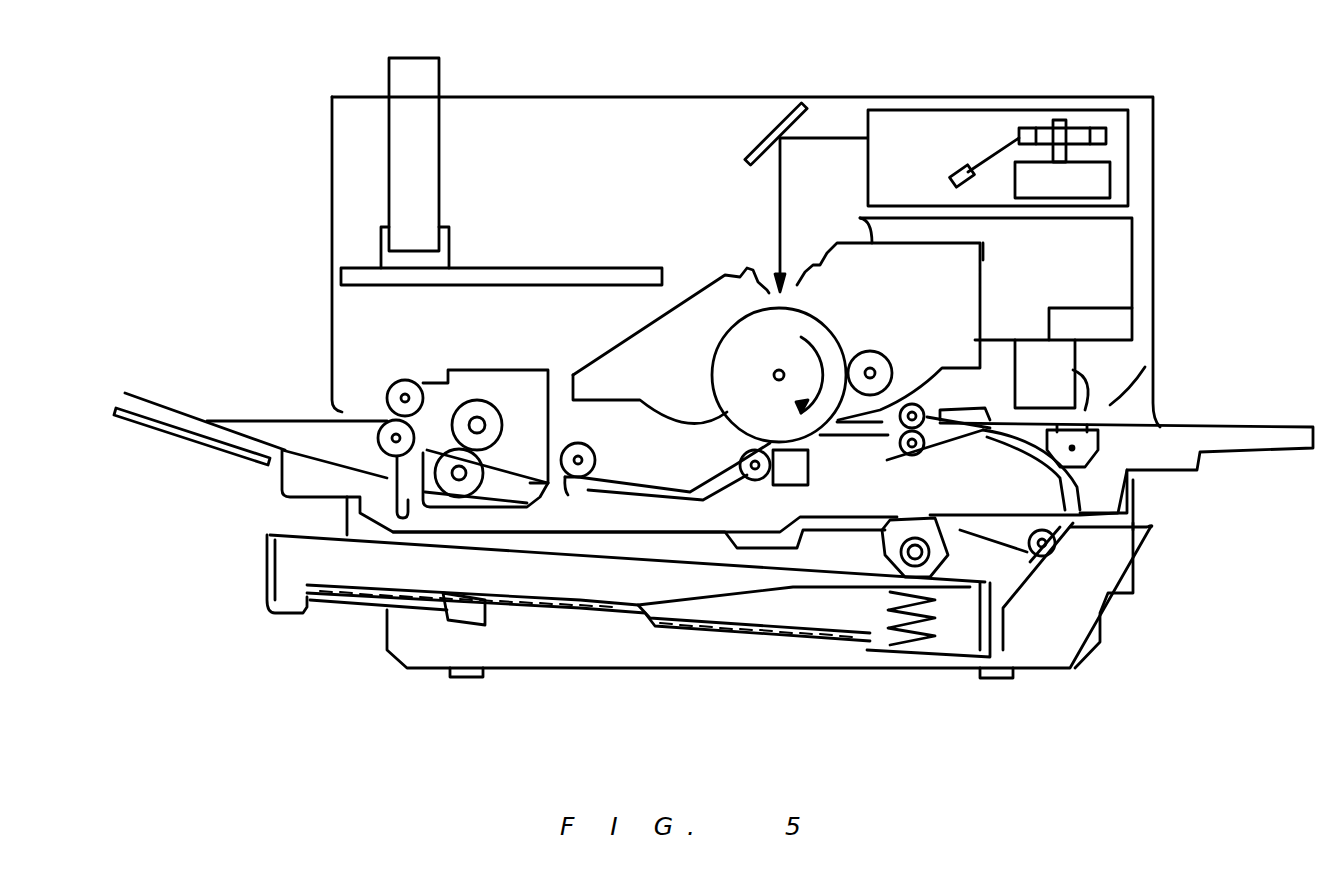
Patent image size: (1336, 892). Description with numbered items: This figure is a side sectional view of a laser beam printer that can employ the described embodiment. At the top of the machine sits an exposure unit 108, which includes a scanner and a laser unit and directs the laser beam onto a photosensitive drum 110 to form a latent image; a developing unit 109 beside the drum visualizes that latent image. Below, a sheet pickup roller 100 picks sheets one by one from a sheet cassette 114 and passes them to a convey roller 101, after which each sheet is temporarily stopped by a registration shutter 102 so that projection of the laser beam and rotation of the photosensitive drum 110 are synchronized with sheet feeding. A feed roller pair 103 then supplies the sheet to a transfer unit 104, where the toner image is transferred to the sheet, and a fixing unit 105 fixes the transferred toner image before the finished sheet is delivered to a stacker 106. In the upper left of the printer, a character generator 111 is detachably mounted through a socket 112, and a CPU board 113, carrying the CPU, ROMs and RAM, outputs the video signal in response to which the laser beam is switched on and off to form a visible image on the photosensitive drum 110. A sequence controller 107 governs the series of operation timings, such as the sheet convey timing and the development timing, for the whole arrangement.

The sheet pickup roller 100 is at (882, 550).
The convey roller 101 is at (1030, 556).
The registration shutter 102 is at (945, 422).
The feed roller pair 103 is at (905, 455).
The transfer unit 104 is at (773, 490).
The fixing unit 105 is at (503, 370).
The stacker 106 is at (247, 437).
The sequence controller 107 is at (1122, 322).
The exposure unit 108 is at (1128, 137).
The developing unit 109 is at (962, 293).
The photosensitive drum 110 is at (748, 316).
The character generator 111 is at (439, 70).
The socket 112 is at (452, 240).
The CPU board 113 is at (557, 267).
The sheet cassette 114 is at (265, 572).